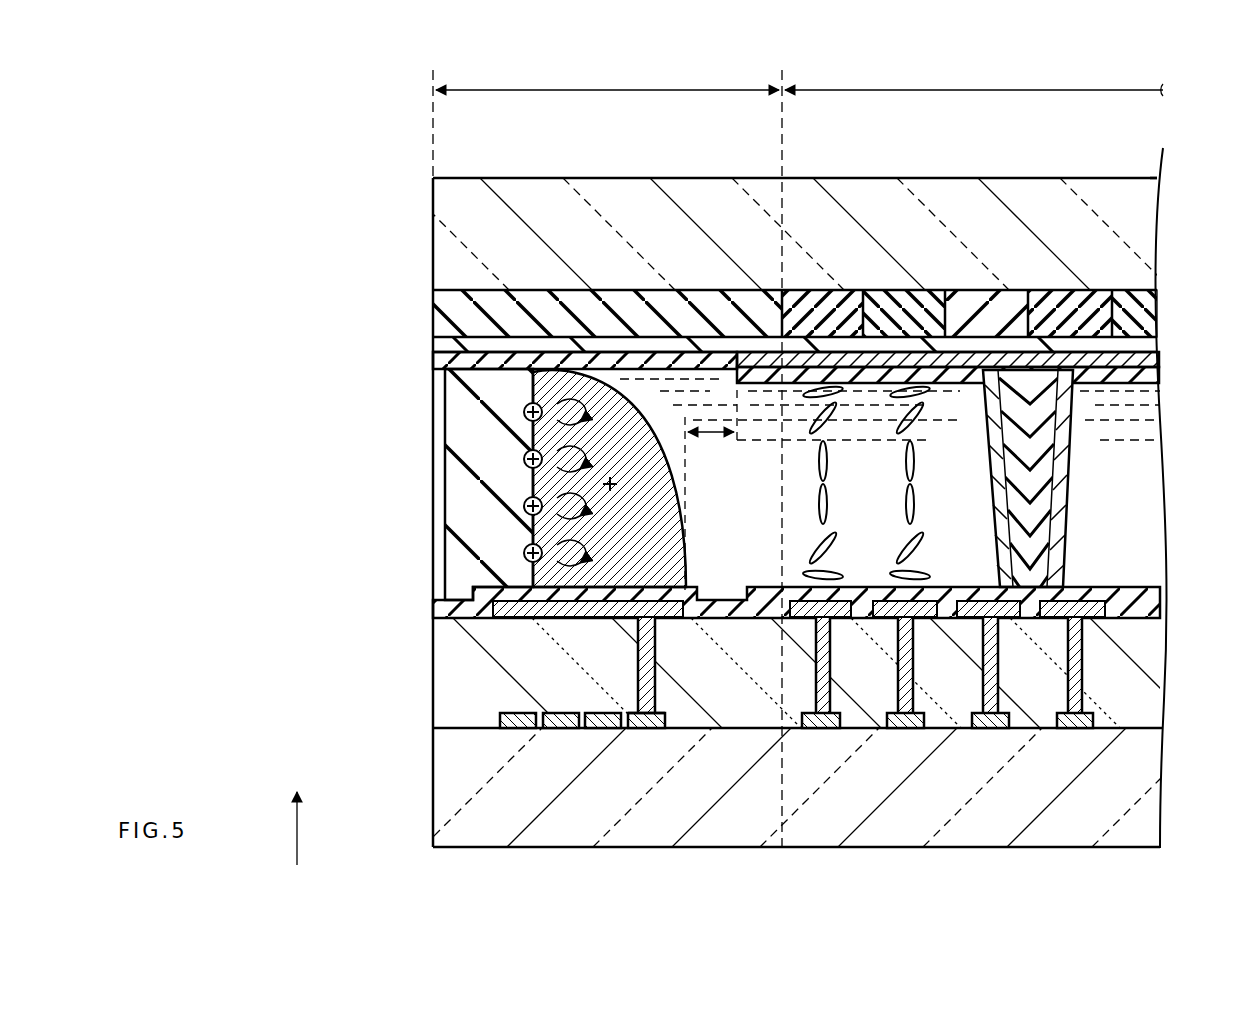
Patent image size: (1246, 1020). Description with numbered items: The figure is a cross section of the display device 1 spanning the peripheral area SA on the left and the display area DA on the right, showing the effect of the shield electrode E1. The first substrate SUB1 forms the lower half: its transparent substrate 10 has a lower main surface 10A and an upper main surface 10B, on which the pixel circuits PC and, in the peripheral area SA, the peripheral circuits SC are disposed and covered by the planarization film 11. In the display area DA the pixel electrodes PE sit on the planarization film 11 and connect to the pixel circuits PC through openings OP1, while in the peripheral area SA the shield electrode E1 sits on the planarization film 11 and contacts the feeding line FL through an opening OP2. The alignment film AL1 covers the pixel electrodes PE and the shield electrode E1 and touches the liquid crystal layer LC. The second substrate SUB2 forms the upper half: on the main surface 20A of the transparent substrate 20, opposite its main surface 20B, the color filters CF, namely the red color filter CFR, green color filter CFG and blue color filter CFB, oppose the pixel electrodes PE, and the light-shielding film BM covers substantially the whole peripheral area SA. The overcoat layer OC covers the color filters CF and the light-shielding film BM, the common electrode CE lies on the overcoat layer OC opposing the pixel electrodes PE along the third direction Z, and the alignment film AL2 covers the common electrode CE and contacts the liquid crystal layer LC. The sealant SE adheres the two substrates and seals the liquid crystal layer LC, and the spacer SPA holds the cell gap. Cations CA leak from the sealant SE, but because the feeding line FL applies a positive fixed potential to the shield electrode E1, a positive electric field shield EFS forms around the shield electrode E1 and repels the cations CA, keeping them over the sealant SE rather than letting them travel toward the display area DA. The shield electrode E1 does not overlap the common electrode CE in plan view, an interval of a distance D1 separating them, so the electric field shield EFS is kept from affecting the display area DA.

The display device 1 is at (1105, 67).
The peripheral area SA is at (607, 77).
The display area DA is at (974, 80).
The color filters CF is at (947, 219).
The red color filter CFR is at (834, 296).
The green color filter CFG is at (914, 296).
The blue color filter CFB is at (1043, 238).
The transparent substrate 20 is at (433, 243).
The main surface 20A is at (1128, 286).
The main surface 20B is at (1130, 183).
The second substrate SUB2 is at (759, 240).
The light-shielding film BM is at (436, 306).
The overcoat layer OC is at (436, 342).
The alignment film AL2 is at (759, 363).
The common electrode CE is at (1157, 370).
The cations CA is at (523, 412).
The sealant SE is at (448, 489).
The electric field shield EFS is at (688, 556).
The distance D1 is at (711, 490).
The spacer SPA is at (1043, 478).
The liquid crystal layer LC is at (1162, 522).
The alignment film AL1 is at (436, 612).
The pixel electrodes PE is at (1150, 605).
The shield electrode E1 is at (505, 612).
The planarization film 11 is at (433, 674).
The first substrate SUB1 is at (759, 743).
The transparent substrate 10 is at (433, 778).
The main surface 10A is at (1130, 852).
The main surface 10B is at (1130, 730).
The feeding line FL is at (637, 712).
The peripheral circuits SC is at (665, 735).
The openings OP1 is at (813, 675).
The opening OP2 is at (652, 684).
The pixel circuits PC is at (820, 729).
The third direction Z is at (297, 811).